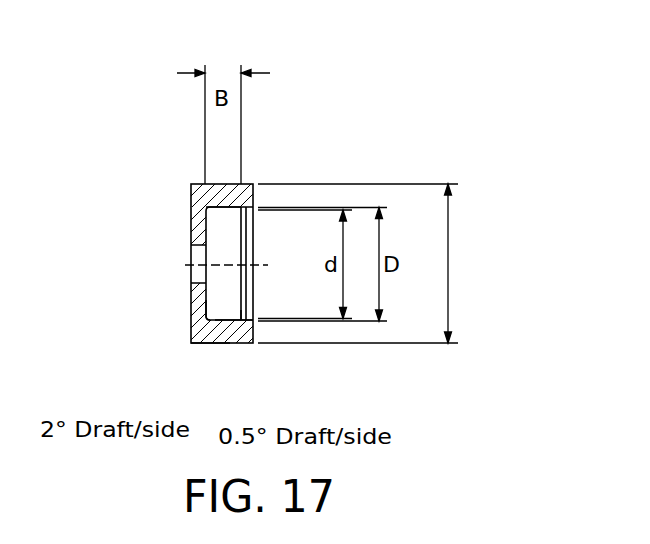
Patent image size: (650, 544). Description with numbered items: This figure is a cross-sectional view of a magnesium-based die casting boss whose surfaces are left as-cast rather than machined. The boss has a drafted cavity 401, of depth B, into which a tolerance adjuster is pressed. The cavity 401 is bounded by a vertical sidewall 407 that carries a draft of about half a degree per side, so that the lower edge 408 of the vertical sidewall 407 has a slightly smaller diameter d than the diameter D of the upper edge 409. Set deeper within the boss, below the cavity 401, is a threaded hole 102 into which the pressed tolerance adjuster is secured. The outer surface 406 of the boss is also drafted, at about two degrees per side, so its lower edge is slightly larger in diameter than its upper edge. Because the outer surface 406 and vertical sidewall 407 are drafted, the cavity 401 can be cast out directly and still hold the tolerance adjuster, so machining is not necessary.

The threaded hole 102 is at (191, 252).
The cavity 401 is at (225, 223).
The outer surface 406 is at (209, 347).
The vertical sidewall 407 is at (233, 324).
The lower edge 408 is at (196, 326).
The upper edge 409 is at (248, 323).